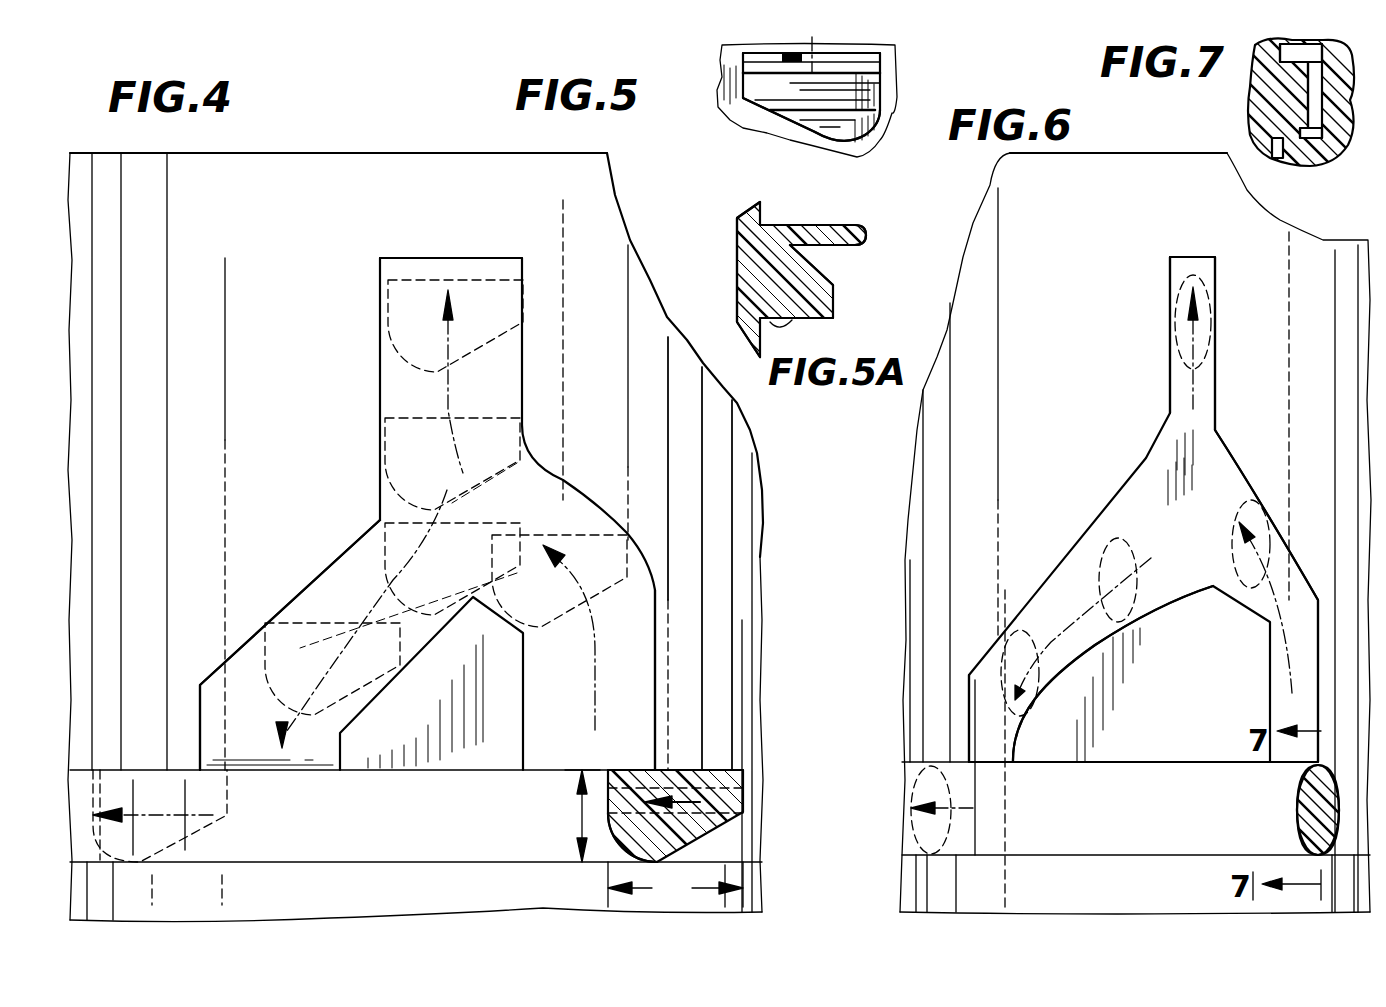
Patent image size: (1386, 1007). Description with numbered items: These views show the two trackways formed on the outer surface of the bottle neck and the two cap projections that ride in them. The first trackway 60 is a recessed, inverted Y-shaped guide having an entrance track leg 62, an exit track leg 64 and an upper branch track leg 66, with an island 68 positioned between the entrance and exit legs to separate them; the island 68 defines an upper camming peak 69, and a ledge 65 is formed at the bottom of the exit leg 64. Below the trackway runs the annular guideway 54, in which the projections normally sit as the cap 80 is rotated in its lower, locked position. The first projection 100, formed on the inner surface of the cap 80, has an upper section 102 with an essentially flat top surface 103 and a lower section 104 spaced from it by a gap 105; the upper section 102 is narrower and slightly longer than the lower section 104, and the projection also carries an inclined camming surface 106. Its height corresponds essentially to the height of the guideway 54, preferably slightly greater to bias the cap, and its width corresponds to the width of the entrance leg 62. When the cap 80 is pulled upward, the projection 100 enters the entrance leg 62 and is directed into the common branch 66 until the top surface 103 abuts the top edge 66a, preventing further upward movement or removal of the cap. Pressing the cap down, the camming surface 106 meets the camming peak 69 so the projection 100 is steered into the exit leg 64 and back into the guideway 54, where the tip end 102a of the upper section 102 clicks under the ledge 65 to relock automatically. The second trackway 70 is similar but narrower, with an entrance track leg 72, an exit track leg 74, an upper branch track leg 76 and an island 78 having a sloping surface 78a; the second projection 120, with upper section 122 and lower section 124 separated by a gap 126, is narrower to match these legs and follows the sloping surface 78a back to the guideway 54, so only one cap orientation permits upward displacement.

In FIG. 4, the annular guideway 54 is at (440, 858).
In FIG. 6, the annular guideway 54 is at (1024, 856).
In FIG. 4, the first trackway 60 is at (358, 535).
In FIG. 4, the entrance track leg 62 is at (655, 660).
In FIG. 4, the exit track leg 64 is at (215, 675).
In FIG. 4, the ledge 65 is at (295, 772).
In FIG. 4, the upper branch track leg 66 is at (380, 380).
In FIG. 4, the top edge 66a is at (452, 266).
In FIG. 4, the island 68 is at (423, 773).
In FIG. 4, the camming peak 69 is at (476, 597).
In FIG. 6, the second trackway 70 is at (1148, 456).
In FIG. 6, the entrance track leg 72 is at (1285, 590).
In FIG. 6, the exit track leg 74 is at (980, 682).
In FIG. 6, the upper branch track leg 76 is at (1210, 398).
In FIG. 6, the island 78 is at (1125, 752).
In FIG. 6, the sloping surface 78a is at (1106, 664).
In FIG. 5A, the cap 80 is at (741, 250).
In FIG. 4, the first projection 100 is at (713, 778).
In FIG. 5, the first projection 100 is at (878, 72).
In FIG. 5A, the first projection 100 is at (835, 298).
In FIG. 5A, the upper section 102 is at (847, 248).
In FIG. 5A, the tip end 102a is at (866, 232).
In FIG. 4, the top surface 103 is at (637, 770).
In FIG. 5, the top surface 103 is at (880, 60).
In FIG. 5A, the top surface 103 is at (770, 226).
In FIG. 5, the lower section 104 is at (838, 145).
In FIG. 5A, the lower section 104 is at (748, 324).
In FIG. 5, the gap 105 is at (848, 133).
In FIG. 5A, the gap 105 is at (830, 285).
In FIG. 4, the inclined camming surface 106 is at (720, 836).
In FIG. 5, the inclined camming surface 106 is at (745, 127).
In FIG. 6, the second projection 120 is at (1297, 811).
In FIG. 7, the second projection 120 is at (1255, 119).
In FIG. 6, the upper section 122 is at (1306, 779).
In FIG. 7, the upper section 122 is at (1263, 62).
In FIG. 6, the lower section 124 is at (1313, 835).
In FIG. 7, the lower section 124 is at (1311, 133).
In FIG. 7, the gap 126 is at (1253, 115).